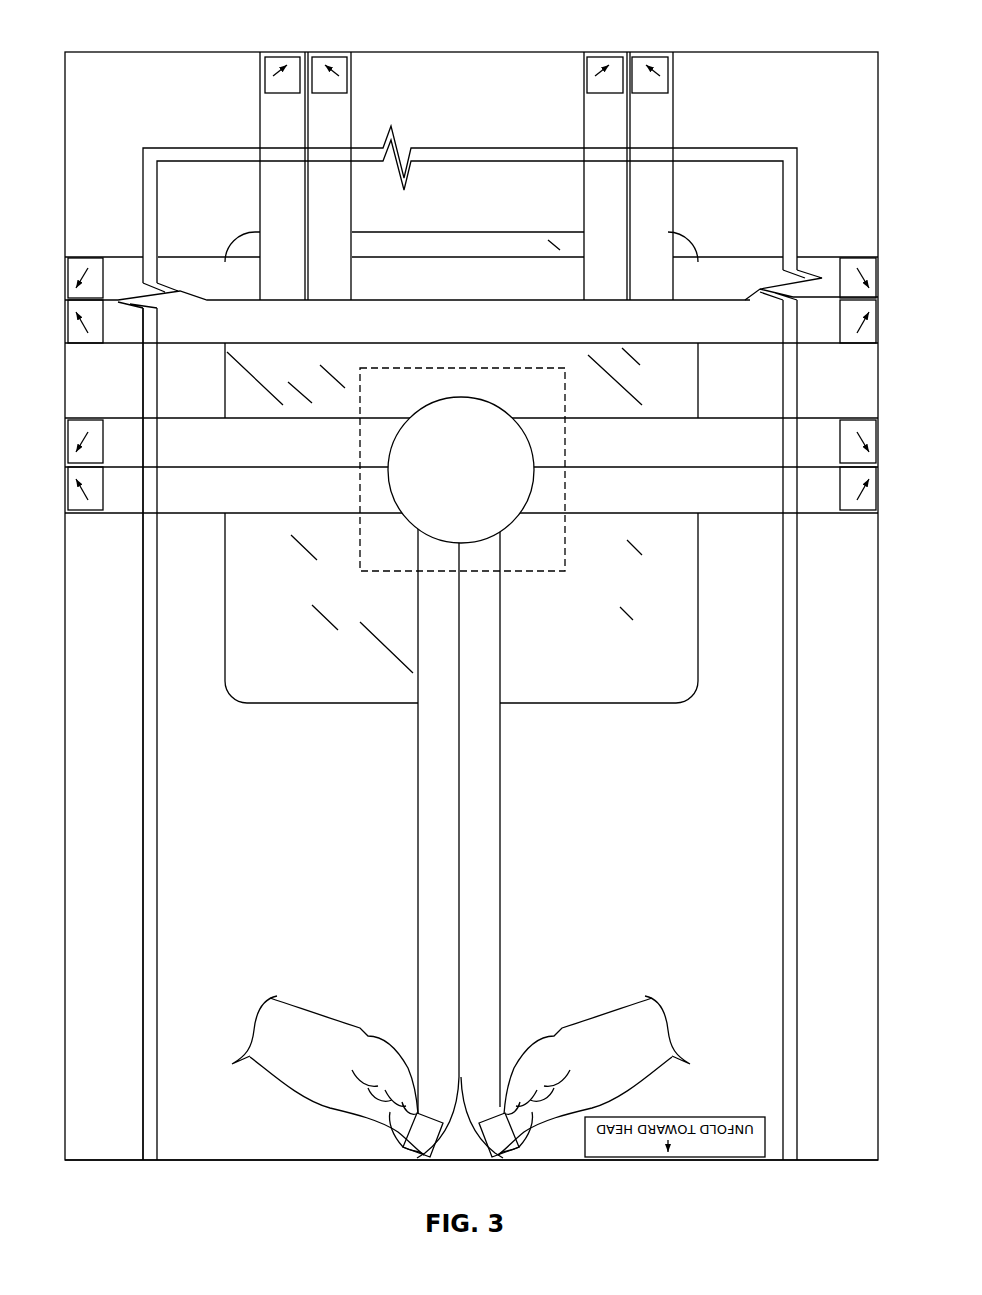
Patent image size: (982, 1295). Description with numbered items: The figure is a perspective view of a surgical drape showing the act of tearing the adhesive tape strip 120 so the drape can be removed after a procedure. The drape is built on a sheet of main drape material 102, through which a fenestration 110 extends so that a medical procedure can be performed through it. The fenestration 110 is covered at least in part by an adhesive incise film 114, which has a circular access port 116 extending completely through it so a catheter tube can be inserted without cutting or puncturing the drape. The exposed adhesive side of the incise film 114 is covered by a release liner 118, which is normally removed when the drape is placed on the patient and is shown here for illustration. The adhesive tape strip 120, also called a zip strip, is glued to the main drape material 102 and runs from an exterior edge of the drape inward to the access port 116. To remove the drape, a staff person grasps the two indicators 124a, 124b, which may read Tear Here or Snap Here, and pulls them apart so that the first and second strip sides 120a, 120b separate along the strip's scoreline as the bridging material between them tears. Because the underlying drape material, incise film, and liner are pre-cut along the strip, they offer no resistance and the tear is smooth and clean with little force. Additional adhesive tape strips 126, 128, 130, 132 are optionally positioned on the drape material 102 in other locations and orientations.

The main drape material 102 is at (258, 797).
The fenestration 110 is at (258, 652).
The adhesive incise film 114 is at (674, 396).
The access port 116 is at (488, 438).
The release liner 118 is at (378, 566).
The adhesive tape strip 120 is at (464, 839).
The first strip side 120a is at (447, 971).
The second strip side 120b is at (485, 966).
The indicator 124a is at (414, 1158).
The indicator 124b is at (486, 1158).
The additional adhesive tape strip 126 is at (196, 467).
The additional adhesive tape strip 128 is at (196, 297).
The additional adhesive tape strip 130 is at (282, 126).
The additional adhesive tape strip 132 is at (655, 122).